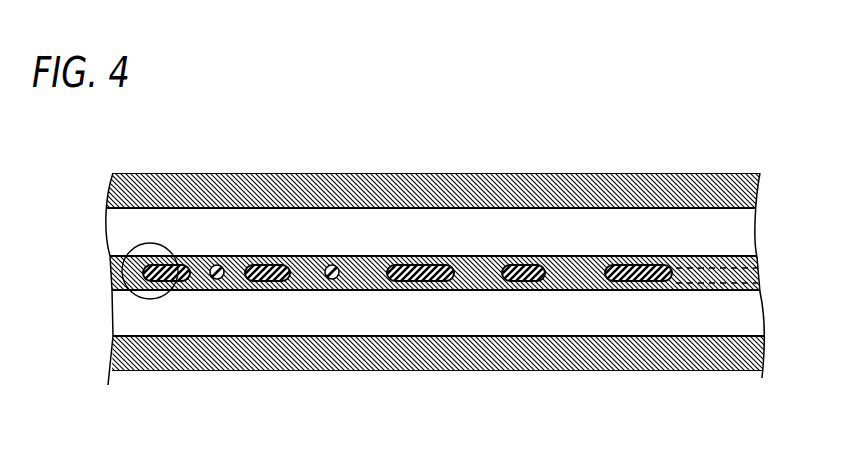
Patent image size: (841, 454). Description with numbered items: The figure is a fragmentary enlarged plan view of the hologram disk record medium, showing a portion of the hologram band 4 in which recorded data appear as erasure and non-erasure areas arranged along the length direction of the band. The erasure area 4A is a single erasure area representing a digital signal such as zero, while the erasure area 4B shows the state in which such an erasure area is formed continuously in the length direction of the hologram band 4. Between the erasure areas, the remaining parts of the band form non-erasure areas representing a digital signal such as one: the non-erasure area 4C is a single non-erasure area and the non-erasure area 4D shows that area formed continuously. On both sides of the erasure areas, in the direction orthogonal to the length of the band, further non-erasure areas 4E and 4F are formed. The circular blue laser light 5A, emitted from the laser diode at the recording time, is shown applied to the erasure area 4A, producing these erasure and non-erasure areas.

The hologram band 4 is at (493, 255).
The erasure area 4A is at (218, 266).
The erasure area 4B is at (167, 266).
The non-erasure area 4C is at (200, 290).
The non-erasure area 4D is at (360, 277).
The non-erasure area 4E is at (270, 256).
The non-erasure area 4F is at (267, 290).
The blue laser light 5A is at (140, 298).